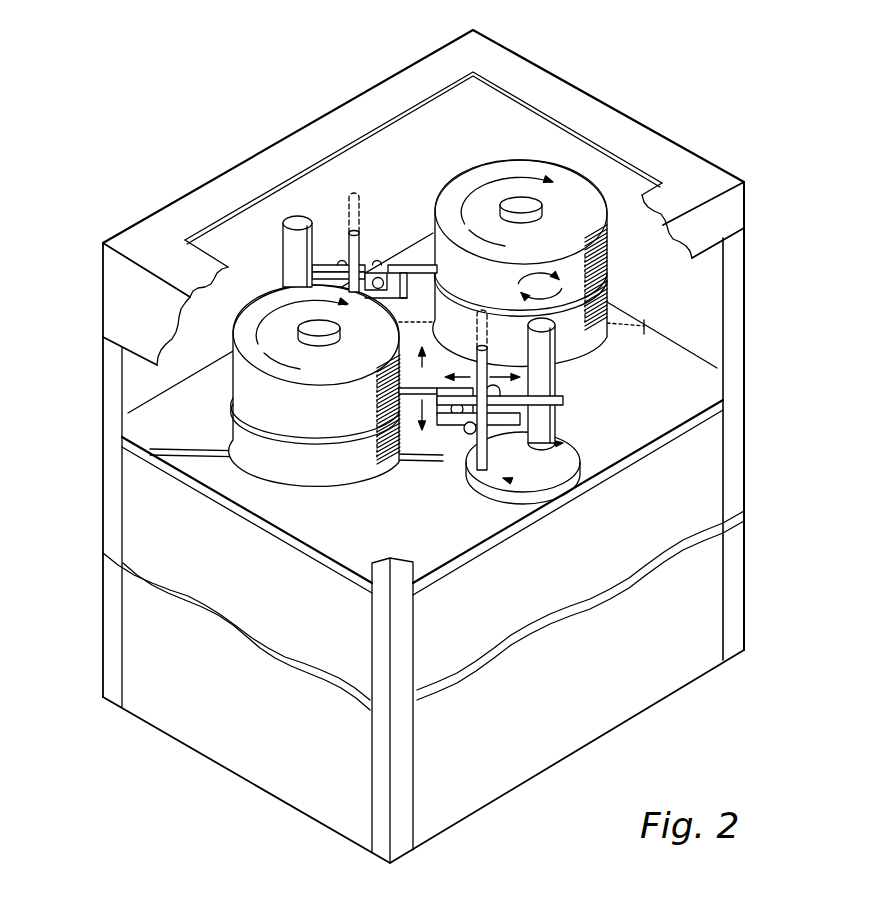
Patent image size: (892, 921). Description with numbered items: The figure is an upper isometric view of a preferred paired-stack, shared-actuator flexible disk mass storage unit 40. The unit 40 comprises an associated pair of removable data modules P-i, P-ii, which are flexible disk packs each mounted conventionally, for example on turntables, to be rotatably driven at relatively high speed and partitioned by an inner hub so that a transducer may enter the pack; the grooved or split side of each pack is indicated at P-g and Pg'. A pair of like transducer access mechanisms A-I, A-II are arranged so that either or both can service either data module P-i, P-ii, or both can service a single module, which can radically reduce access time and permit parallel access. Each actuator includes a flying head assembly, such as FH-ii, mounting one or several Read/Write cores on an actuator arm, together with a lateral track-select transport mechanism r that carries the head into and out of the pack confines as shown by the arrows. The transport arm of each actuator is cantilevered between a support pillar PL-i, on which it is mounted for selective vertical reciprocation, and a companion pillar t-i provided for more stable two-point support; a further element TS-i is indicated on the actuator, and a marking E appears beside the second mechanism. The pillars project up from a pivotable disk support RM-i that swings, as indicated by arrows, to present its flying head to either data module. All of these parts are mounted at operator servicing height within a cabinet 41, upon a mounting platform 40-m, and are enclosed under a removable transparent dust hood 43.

The flexible disk mass storage unit 40 is at (678, 77).
The removeable transparent dust hood 43 is at (708, 158).
The cabinet 41 is at (748, 456).
The mounting platform 40-m is at (665, 311).
The data module P-i is at (551, 234).
The data module P-ii is at (277, 399).
The pulley groove P-g is at (607, 267).
The pulley groove Pg' is at (365, 436).
The flying head assembly FH-ii is at (415, 263).
The transducer access mechanism A-I is at (538, 417).
The transducer access mechanism A-II is at (325, 228).
The element E is at (275, 281).
The support pillar PL-i is at (568, 384).
The tension shaft TS-i is at (541, 390).
The companion pillar t-i is at (468, 434).
The pivotable disk support RM-i is at (485, 485).
The lateral transport mechanism r is at (449, 376).